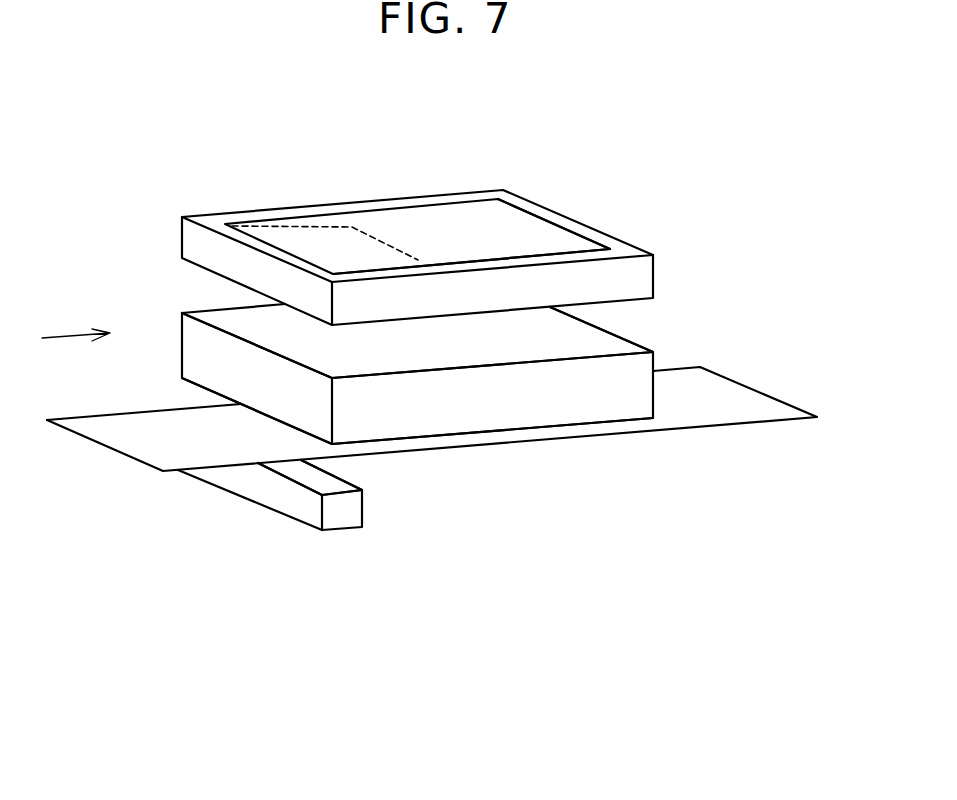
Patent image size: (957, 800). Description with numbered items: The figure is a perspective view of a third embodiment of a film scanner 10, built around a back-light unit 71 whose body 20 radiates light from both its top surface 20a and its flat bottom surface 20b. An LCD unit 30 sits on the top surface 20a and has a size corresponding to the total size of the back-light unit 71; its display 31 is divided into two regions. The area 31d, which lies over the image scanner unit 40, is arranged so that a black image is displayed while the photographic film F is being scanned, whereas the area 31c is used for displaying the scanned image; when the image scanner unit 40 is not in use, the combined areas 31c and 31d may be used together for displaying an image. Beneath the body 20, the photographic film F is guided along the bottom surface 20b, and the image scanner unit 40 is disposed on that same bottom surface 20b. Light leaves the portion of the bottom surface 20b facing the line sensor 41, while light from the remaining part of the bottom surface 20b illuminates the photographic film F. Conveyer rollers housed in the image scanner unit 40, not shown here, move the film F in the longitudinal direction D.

The film scanner 10 is at (763, 182).
The body 20 is at (487, 398).
The top surface 20a is at (485, 342).
The bottom surface 20b is at (417, 440).
The LCD unit 30 is at (582, 218).
The display area 31 is at (453, 203).
The area for displaying a scanned image 31c is at (510, 227).
The area corresponding to the image scanner unit 31d is at (333, 242).
The image scanner unit 40 is at (342, 532).
The line sensor 41 is at (318, 479).
The back-light unit 71 is at (628, 338).
The photographic film F is at (750, 405).
The longitudinal direction D is at (76, 321).